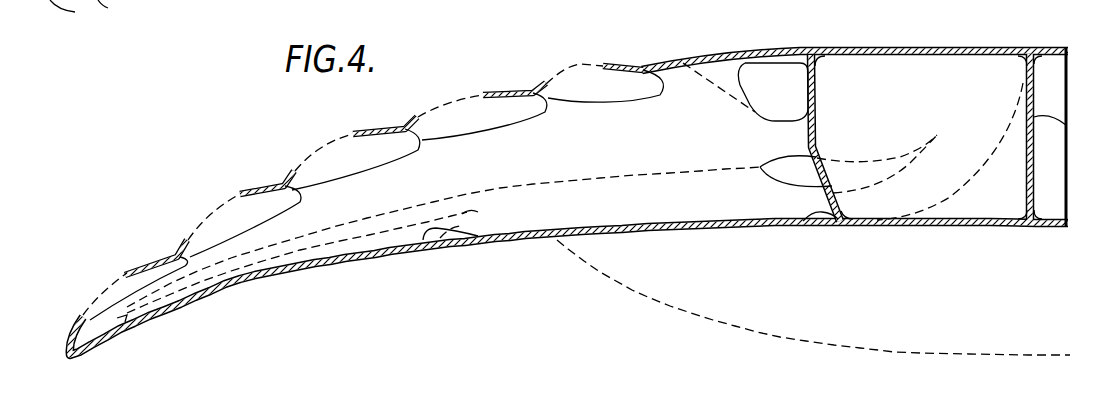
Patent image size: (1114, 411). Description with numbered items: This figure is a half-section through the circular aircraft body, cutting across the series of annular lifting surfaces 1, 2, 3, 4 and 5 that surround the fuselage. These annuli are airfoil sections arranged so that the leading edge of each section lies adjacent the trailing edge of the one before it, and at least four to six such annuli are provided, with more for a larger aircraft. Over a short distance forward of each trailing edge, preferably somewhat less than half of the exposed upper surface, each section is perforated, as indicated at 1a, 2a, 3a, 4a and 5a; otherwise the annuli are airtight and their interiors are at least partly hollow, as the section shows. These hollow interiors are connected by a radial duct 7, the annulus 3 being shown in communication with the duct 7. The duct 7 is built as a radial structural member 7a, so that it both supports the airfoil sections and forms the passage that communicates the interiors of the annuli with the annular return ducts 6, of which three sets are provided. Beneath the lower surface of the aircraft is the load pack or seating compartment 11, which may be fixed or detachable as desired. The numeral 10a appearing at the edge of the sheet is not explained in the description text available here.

The annular lifting surface 1 is at (148, 268).
The perforated portion 1a is at (110, 287).
The annular lifting surface 2 is at (262, 200).
The perforated portion 2a is at (220, 206).
The annular lifting surface 3 is at (372, 140).
The perforated portion 3a is at (324, 143).
The annular lifting surface 4 is at (510, 103).
The perforated portion 4a is at (446, 105).
The annular lifting surface 5 is at (630, 76).
The perforated portion 5a is at (578, 68).
The annular return duct 6 is at (777, 70).
The radial duct 7 is at (590, 166).
The radial structural member 7a is at (978, 143).
The adjacent figure element 10a is at (104, 14).
The load pack or seating compartment 11 is at (600, 270).